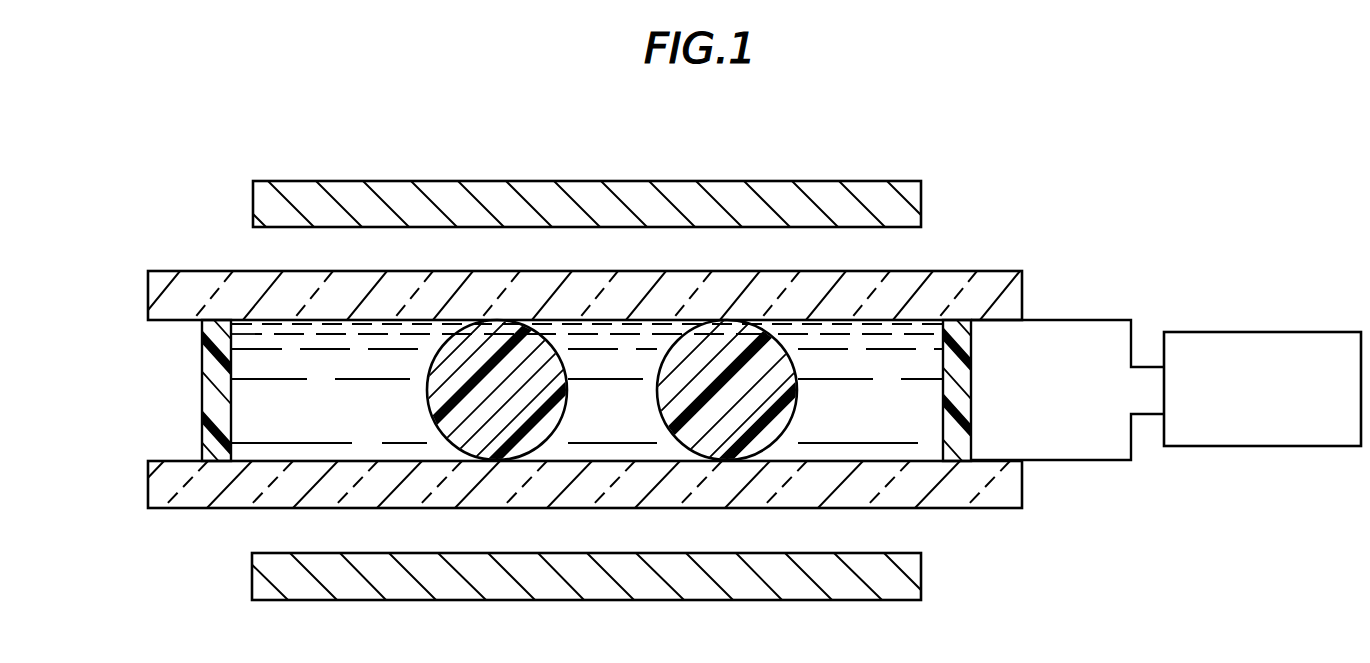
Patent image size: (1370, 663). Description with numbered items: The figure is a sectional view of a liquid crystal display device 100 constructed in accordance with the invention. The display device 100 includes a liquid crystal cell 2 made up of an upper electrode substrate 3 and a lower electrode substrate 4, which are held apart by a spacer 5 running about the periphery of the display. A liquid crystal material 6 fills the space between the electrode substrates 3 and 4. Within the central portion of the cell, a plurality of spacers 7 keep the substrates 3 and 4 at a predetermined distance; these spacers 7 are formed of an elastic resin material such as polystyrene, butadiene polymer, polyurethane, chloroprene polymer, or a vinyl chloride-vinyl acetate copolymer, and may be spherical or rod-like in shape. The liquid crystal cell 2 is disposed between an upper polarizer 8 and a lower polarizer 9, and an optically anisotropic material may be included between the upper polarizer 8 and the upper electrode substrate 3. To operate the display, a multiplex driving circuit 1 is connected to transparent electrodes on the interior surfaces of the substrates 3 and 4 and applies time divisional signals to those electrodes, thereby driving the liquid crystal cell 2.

The liquid crystal display device 100 is at (458, 162).
The multiplex driving circuit 1 is at (1240, 332).
The liquid crystal cell 2 is at (112, 278).
The upper electrode substrate 3 is at (995, 291).
The lower electrode substrate 4 is at (973, 490).
The spacer 5 is at (972, 373).
The liquid crystal material 6 is at (847, 418).
The spacers 7 is at (493, 347).
The upper polarizer 8 is at (771, 182).
The lower polarizer 9 is at (412, 588).